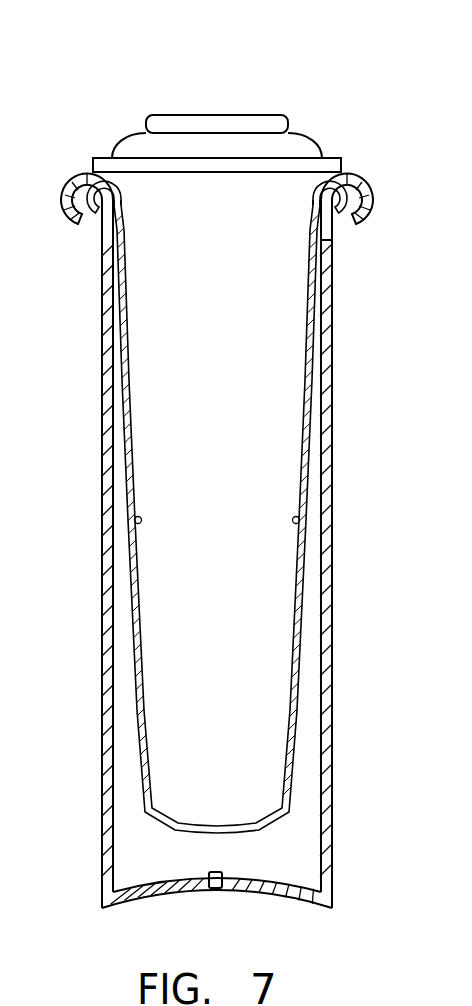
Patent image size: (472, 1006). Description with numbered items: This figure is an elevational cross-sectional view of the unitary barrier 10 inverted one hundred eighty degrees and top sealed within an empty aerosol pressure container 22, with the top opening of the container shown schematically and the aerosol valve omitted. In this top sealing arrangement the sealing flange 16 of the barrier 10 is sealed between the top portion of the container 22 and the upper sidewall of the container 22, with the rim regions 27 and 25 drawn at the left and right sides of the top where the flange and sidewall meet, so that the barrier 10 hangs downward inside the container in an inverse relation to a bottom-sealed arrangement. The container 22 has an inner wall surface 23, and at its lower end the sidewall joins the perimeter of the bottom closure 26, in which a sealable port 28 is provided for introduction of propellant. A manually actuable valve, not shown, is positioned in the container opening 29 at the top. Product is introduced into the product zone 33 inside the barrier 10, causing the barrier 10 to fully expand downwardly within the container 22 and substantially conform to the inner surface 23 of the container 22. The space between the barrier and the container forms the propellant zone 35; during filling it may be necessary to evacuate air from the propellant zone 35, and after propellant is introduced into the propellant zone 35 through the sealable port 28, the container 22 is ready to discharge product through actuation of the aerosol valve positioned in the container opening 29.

The barrier 10 is at (300, 385).
The sealing flange 16 is at (108, 178).
The pressure container 22 is at (337, 528).
The inner wall surface 23 is at (318, 591).
The curled liner rim 25 is at (375, 204).
The bottom closure 26 is at (267, 893).
The curled shell edge 27 is at (79, 174).
The sealable port 28 is at (209, 873).
The container opening 29 is at (217, 122).
The product zone 33 is at (218, 474).
The propellant zone 35 is at (375, 179).